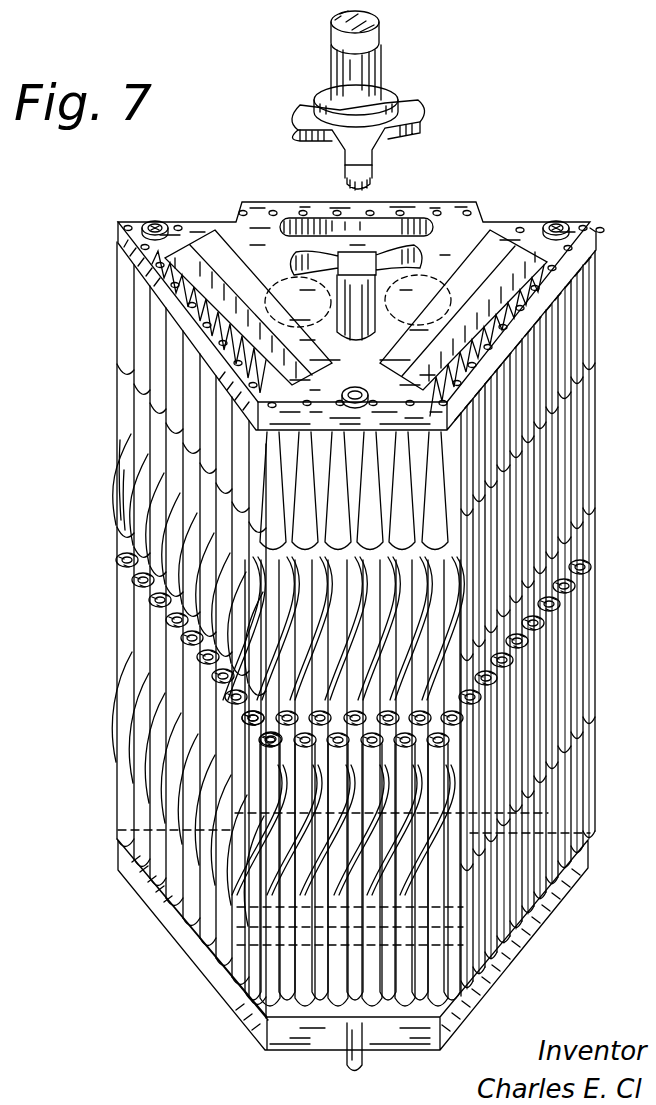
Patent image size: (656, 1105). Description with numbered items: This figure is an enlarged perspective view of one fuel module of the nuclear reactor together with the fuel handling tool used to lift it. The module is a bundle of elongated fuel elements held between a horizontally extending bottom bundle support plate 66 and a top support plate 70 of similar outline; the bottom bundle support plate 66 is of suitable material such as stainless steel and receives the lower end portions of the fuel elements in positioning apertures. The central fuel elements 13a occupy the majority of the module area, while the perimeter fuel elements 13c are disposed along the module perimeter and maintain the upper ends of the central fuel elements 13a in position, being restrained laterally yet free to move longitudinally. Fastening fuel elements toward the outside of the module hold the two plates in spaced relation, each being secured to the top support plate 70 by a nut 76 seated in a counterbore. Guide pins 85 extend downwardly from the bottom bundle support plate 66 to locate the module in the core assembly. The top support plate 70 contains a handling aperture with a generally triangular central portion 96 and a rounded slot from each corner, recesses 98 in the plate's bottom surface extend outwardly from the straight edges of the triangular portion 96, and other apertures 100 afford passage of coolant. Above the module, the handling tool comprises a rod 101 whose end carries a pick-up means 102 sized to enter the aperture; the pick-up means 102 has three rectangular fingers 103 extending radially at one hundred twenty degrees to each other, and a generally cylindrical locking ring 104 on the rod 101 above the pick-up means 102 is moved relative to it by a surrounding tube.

The rod 101 is at (376, 17).
The locking ring 104 is at (390, 73).
The rectangular fingers 103 is at (418, 100).
The pick-up means 102 is at (421, 116).
The triangular central portion 96 is at (354, 264).
The recesses 98 is at (414, 258).
The apertures 100 is at (207, 250).
The nut 76 is at (155, 222).
The top support plate 70 is at (594, 250).
The central fuel elements 13a is at (200, 293).
The perimeter fuel elements 13c is at (137, 420).
The bottom bundle support plate 66 is at (155, 916).
The guide pins 85 is at (348, 1064).